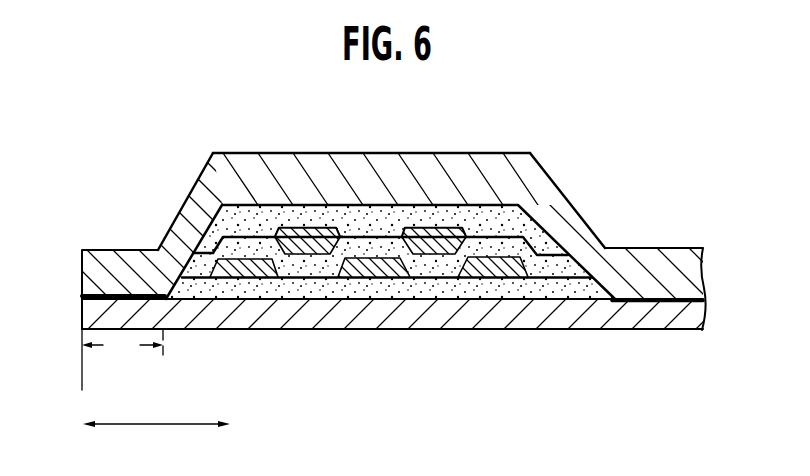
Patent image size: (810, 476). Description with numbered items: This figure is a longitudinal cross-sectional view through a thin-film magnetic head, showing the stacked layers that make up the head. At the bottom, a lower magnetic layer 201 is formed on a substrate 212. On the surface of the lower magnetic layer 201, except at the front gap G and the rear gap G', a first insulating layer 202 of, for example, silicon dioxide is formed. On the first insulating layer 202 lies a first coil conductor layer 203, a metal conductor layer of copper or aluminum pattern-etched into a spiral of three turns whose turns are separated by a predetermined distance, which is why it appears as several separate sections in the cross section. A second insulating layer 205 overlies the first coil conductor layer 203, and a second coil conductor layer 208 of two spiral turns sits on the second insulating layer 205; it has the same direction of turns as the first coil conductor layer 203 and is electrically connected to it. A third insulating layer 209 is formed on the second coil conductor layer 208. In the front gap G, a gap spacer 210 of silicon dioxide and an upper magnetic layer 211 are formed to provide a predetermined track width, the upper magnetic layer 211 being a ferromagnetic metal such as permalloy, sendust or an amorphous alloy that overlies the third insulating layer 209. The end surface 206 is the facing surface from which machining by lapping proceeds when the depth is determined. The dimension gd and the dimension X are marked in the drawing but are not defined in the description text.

The lower magnetic layer 201 is at (88, 318).
The first insulating layer 202 is at (197, 283).
The first coil conductor layer 203 is at (241, 278).
The second insulating layer 205 is at (384, 220).
The end surface (facing surface) 206 is at (83, 273).
The second coil conductor layer 208 is at (302, 262).
The third insulating layer 209 is at (311, 207).
The gap spacer 210 is at (135, 290).
The upper magnetic layer 211 is at (242, 158).
The substrate 212 is at (703, 330).
The front gap G is at (97, 287).
The rear gap G' is at (657, 343).
The gate-to-drain distance gd is at (122, 343).
The dimension X is at (156, 436).